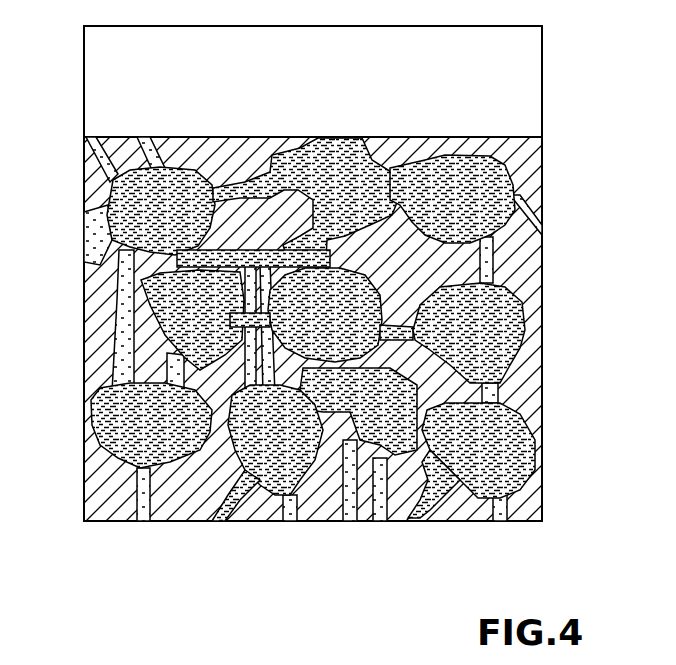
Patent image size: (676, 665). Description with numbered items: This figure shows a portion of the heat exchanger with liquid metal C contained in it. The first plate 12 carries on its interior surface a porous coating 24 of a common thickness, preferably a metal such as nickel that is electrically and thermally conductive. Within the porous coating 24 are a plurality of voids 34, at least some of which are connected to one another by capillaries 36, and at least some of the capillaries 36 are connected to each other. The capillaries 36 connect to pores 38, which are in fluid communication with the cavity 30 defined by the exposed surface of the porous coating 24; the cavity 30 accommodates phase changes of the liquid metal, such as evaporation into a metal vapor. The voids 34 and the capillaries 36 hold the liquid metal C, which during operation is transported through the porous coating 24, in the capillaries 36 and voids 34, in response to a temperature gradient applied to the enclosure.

The first plate 12 is at (110, 80).
The porous coating 24 is at (98, 195).
The cavity 30 is at (308, 600).
The void 34 is at (322, 165).
The capillary 36 is at (213, 192).
The pore 38 is at (143, 521).
The liquid metal C is at (241, 178).